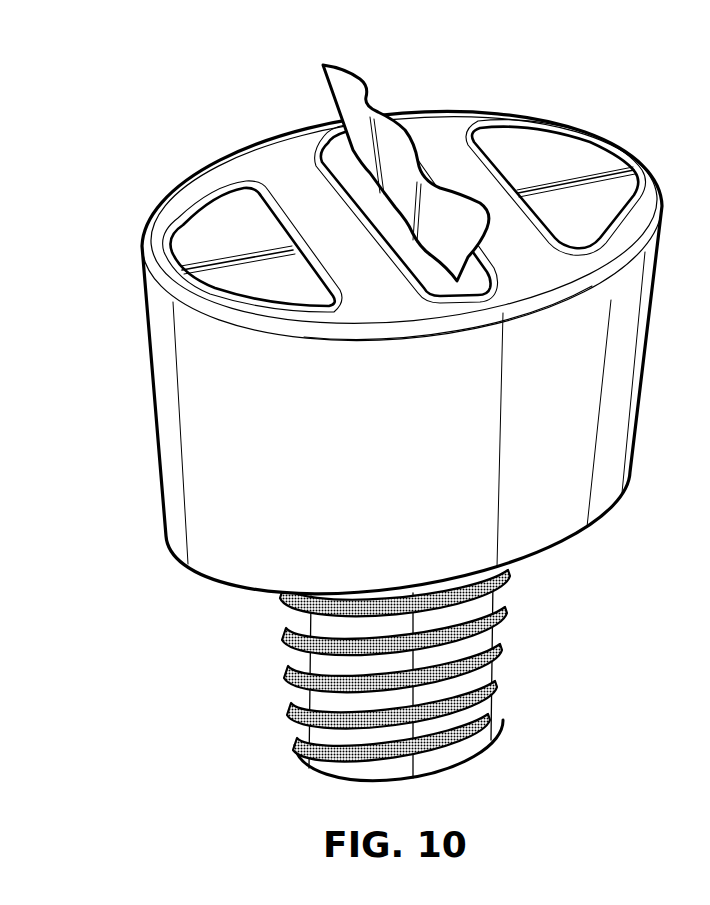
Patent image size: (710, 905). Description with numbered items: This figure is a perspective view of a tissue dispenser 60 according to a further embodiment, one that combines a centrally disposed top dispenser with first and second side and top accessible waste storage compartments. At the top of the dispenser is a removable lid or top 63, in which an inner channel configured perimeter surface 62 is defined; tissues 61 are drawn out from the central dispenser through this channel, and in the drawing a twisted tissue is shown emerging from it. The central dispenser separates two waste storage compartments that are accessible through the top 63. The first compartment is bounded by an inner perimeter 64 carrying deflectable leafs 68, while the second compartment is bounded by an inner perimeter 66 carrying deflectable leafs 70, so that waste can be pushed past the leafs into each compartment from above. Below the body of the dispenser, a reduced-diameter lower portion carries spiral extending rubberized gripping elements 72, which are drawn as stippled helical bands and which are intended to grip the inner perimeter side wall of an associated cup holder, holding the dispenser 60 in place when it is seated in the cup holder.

The tissue dispenser 60 is at (239, 139).
The tissues 61 is at (350, 73).
The inner channel configured perimeter surface 62 is at (326, 130).
The removable lid or top 63 is at (432, 124).
The inner perimeter 64 is at (196, 200).
The inner perimeter 66 is at (556, 122).
The deflectable leafs 68 is at (185, 240).
The deflectable leafs 70 is at (585, 148).
The spiral extending rubberized gripping elements 72 is at (278, 612).